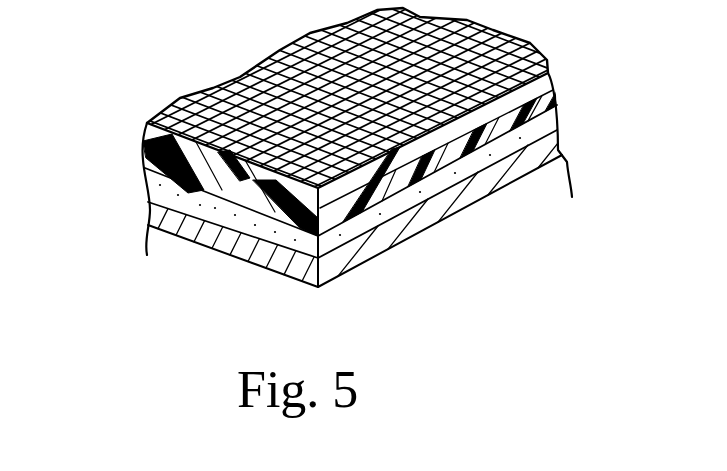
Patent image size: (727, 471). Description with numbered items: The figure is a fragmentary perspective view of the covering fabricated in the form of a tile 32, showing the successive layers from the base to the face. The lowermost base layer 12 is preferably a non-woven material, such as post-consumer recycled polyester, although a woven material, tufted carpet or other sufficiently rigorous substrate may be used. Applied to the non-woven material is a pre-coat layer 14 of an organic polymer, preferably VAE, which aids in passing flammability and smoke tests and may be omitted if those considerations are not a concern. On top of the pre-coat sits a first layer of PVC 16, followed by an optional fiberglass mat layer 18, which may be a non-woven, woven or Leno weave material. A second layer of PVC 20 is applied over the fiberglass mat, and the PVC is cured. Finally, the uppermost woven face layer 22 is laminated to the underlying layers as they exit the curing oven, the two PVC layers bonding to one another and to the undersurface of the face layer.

The base layer 12 is at (183, 233).
The pre-coat layer 14 is at (153, 190).
The first layer of PVC 16 is at (143, 163).
The fiberglass mat layer 18 is at (255, 200).
The second layer of PVC 20 is at (150, 143).
The face layer 22 is at (200, 104).
The tile 32 is at (397, 248).